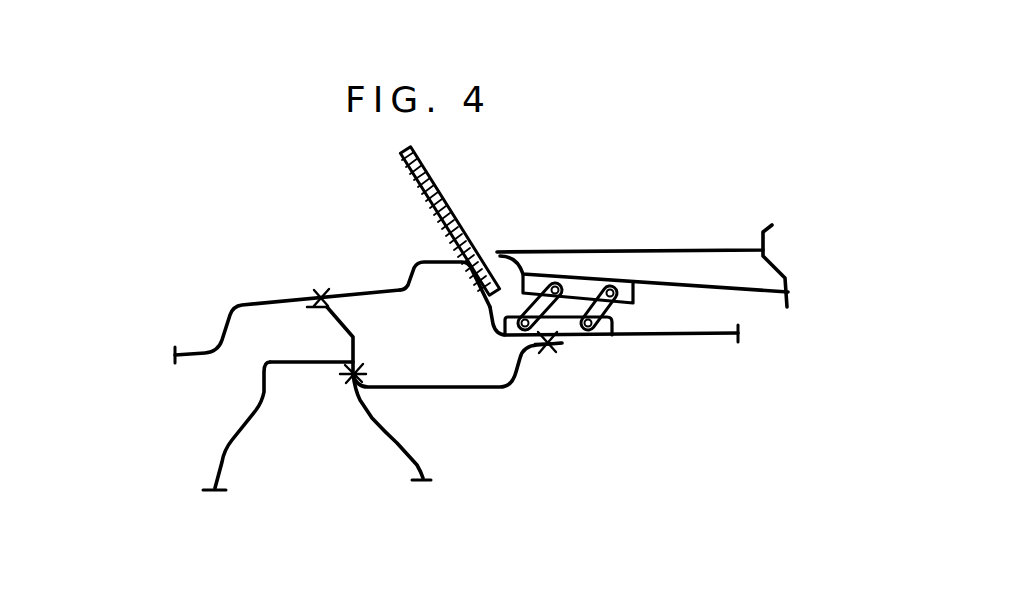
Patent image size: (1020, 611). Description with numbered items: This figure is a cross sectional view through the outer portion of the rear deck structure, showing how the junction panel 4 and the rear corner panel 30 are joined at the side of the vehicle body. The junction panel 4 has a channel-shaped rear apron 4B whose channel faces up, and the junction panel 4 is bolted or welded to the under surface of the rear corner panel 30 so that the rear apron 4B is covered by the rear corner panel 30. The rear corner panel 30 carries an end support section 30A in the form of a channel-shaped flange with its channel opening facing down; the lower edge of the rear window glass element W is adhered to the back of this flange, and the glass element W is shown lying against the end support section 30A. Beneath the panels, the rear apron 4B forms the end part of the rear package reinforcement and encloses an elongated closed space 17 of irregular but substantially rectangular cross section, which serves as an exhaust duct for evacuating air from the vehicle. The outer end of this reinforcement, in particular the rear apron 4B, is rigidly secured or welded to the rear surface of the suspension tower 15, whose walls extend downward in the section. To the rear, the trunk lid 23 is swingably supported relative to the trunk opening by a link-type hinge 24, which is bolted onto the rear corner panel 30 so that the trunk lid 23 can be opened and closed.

The junction panel 4 is at (238, 306).
The channel-shaped rear apron 4B is at (468, 389).
The suspension tower 15 is at (224, 450).
The elongated closed space 17 is at (431, 348).
The trunk lid 23 is at (680, 252).
The link-type hinge 24 is at (624, 318).
The rear corner panel 30 is at (670, 334).
The end support section 30A is at (433, 262).
The rear window glass element W is at (456, 212).